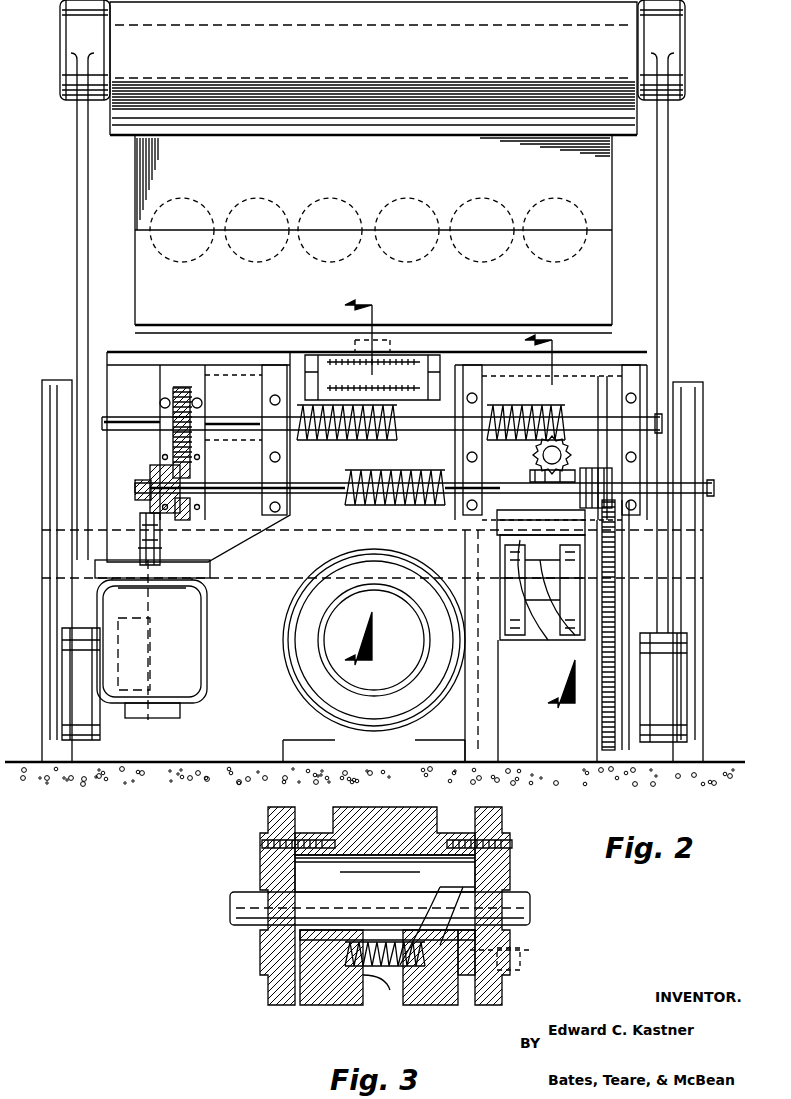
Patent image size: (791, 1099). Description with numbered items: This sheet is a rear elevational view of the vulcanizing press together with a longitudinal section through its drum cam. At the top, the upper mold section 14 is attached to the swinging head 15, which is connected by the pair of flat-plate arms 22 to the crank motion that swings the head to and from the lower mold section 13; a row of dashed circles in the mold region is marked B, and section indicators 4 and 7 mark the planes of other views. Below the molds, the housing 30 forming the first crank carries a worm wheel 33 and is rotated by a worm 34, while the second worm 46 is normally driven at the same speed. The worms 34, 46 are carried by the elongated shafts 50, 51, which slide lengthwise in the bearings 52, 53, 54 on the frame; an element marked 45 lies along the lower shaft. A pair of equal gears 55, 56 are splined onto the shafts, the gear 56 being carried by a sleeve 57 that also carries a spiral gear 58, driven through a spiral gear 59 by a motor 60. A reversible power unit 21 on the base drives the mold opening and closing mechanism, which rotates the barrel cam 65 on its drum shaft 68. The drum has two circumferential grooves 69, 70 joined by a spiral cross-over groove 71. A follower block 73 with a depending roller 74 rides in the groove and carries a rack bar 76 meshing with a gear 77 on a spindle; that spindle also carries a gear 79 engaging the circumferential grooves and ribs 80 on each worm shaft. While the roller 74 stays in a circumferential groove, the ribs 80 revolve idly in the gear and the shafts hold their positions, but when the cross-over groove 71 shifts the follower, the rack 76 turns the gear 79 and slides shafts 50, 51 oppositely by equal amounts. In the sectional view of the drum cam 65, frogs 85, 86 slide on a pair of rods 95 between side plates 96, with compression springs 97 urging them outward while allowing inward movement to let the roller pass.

In FIG. 2, the swinging head 15 is at (373, 68).
In FIG. 2, the upper mold section 14 is at (373, 230).
In FIG. 2, the lower mold section 13 is at (373, 308).
In FIG. 2, the bobbins B is at (283, 203).
In FIG. 2, the arms 22 is at (70, 250).
In FIG. 2, the housing 30 is at (400, 395).
In FIG. 2, the section line 4- 4 is at (348, 480).
In FIG. 2, the section line 7- 7 is at (542, 522).
In FIG. 2, the bearing 52 is at (270, 378).
In FIG. 2, the bearing 53 is at (470, 378).
In FIG. 2, the bearing 54 is at (612, 390).
In FIG. 2, the gear 55 is at (172, 390).
In FIG. 2, the worm shaft 50 is at (236, 425).
In FIG. 2, the circumferential grooves and ribs 80 is at (532, 405).
In FIG. 2, the rack bar 76 is at (598, 428).
In FIG. 2, the spiral gear 58 is at (155, 468).
In FIG. 2, the spiral gear 59 is at (136, 488).
In FIG. 2, the worm shaft 51 is at (232, 484).
In FIG. 2, the worm 34 is at (326, 446).
In FIG. 2, the worm wheel 33 is at (410, 430).
In FIG. 2, the gear 79 is at (536, 458).
In FIG. 2, the gear 77 is at (530, 476).
In FIG. 2, the sleeve 57 is at (190, 504).
In FIG. 2, the shaft 45 is at (332, 496).
In FIG. 2, the worm 46 is at (395, 506).
In FIG. 2, the block 73 is at (540, 510).
In FIG. 2, the roller 74 is at (615, 540).
In FIG. 2, the gear 56 is at (160, 535).
In FIG. 2, the motor 60 is at (207, 636).
In FIG. 2, the reversible power unit 21 is at (284, 680).
In FIG. 2, the spiral cross-over groove 71 is at (533, 640).
In FIG. 3, the spiral cross-over groove 71 is at (400, 980).
In FIG. 2, the barrel cam 65 is at (558, 638).
In FIG. 3, the barrel cam 65 is at (268, 862).
In FIG. 3, the drum shaft 68 is at (525, 912).
In FIG. 3, the circumferential groove 69 is at (452, 822).
In FIG. 3, the circumferential groove 70 is at (317, 822).
In FIG. 3, the rods 95 is at (530, 952).
In FIG. 3, the side plates 96 is at (268, 972).
In FIG. 3, the frog 86 is at (336, 1005).
In FIG. 3, the frog 85 is at (436, 1005).
In FIG. 3, the compression springs 97 is at (398, 968).